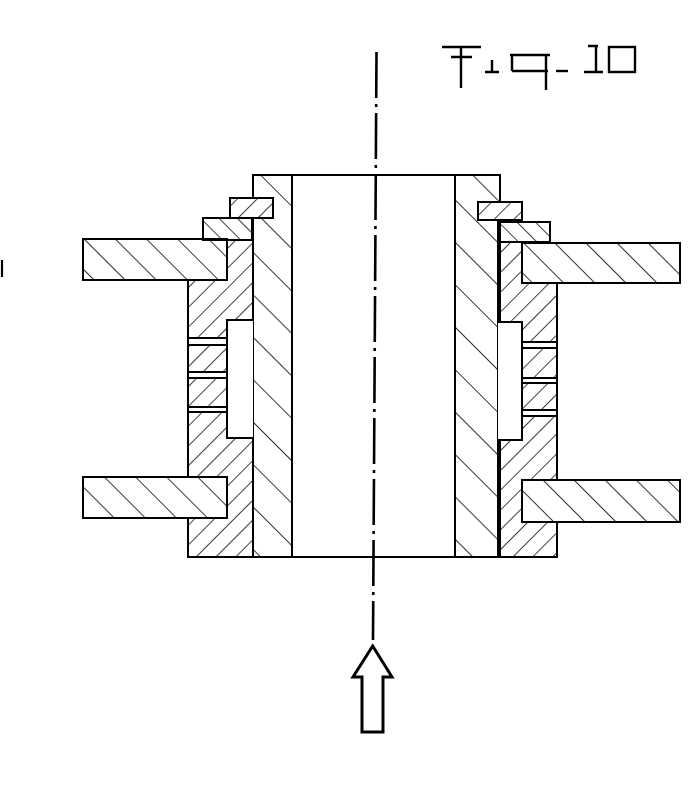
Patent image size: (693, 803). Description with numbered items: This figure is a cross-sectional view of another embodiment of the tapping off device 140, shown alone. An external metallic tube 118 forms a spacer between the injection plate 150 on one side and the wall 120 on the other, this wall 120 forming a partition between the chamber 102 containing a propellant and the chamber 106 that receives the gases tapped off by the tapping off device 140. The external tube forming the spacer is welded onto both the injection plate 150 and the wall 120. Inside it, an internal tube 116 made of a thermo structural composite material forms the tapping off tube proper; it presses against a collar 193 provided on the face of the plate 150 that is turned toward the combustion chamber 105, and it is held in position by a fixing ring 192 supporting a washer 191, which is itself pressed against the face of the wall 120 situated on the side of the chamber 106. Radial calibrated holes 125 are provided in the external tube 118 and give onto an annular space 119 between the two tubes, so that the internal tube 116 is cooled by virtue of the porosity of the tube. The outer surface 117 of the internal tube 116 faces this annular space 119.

The chamber 102 is at (208, 317).
The combustion chamber 105 is at (132, 566).
The chamber 106 is at (147, 145).
The internal tube 116 is at (283, 402).
The tube outer surface 117 is at (297, 507).
The external metallic tube 118 is at (188, 342).
The annular space 119 is at (514, 432).
The wall 120 is at (122, 252).
The radial calibrated holes 125 is at (188, 409).
The tapping off device 140 is at (222, 195).
The injection plate 150 is at (640, 503).
The washer 191 is at (550, 236).
The fixing ring 192 is at (522, 208).
The collar 193 is at (535, 553).